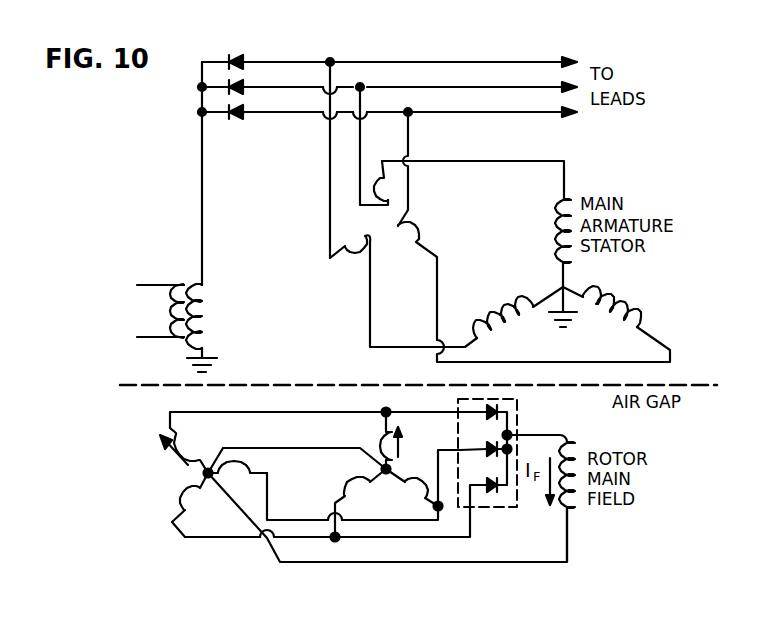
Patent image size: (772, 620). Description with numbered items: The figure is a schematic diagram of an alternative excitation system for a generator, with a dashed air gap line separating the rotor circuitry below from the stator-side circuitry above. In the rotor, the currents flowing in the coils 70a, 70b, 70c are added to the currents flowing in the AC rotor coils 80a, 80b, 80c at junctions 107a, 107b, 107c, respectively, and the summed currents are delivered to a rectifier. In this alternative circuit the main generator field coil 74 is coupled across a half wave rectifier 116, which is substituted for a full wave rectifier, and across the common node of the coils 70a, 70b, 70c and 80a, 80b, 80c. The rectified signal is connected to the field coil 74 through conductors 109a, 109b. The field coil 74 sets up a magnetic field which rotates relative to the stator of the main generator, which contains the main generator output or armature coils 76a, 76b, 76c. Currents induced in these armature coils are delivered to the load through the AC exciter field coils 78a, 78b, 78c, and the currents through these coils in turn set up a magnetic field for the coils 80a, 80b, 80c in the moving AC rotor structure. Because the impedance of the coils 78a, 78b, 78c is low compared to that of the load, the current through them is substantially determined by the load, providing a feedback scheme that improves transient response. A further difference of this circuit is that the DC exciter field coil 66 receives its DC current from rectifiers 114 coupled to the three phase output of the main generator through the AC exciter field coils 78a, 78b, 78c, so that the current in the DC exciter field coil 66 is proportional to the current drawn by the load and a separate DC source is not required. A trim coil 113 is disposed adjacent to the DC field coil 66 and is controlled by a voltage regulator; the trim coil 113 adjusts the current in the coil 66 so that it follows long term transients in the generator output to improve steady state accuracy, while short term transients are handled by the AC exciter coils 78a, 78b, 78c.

The rectifiers 114 is at (244, 108).
The trim coil 113 is at (155, 285).
The DC exciter field coil 66 is at (212, 318).
The AC exciter field coil 78a is at (352, 252).
The AC exciter field coil 78b is at (388, 196).
The AC exciter field coil 78c is at (415, 237).
The main generator armature coil 76a is at (511, 310).
The main generator armature coil 76b is at (556, 228).
The main generator armature coil 76c is at (620, 312).
The junction 107a is at (438, 506).
The junction 107b is at (338, 538).
The junction 107c is at (386, 411).
The coil 70a is at (185, 498).
The coil 70b is at (185, 440).
The coil 70c is at (252, 473).
The AC rotor coil 80a is at (345, 492).
The AC rotor coil 80b is at (380, 440).
The AC rotor coil 80c is at (417, 492).
The half wave rectifier 116 is at (482, 500).
The conductor 109a is at (548, 435).
The conductor 109b is at (565, 568).
The main generator field coil 74 is at (573, 510).